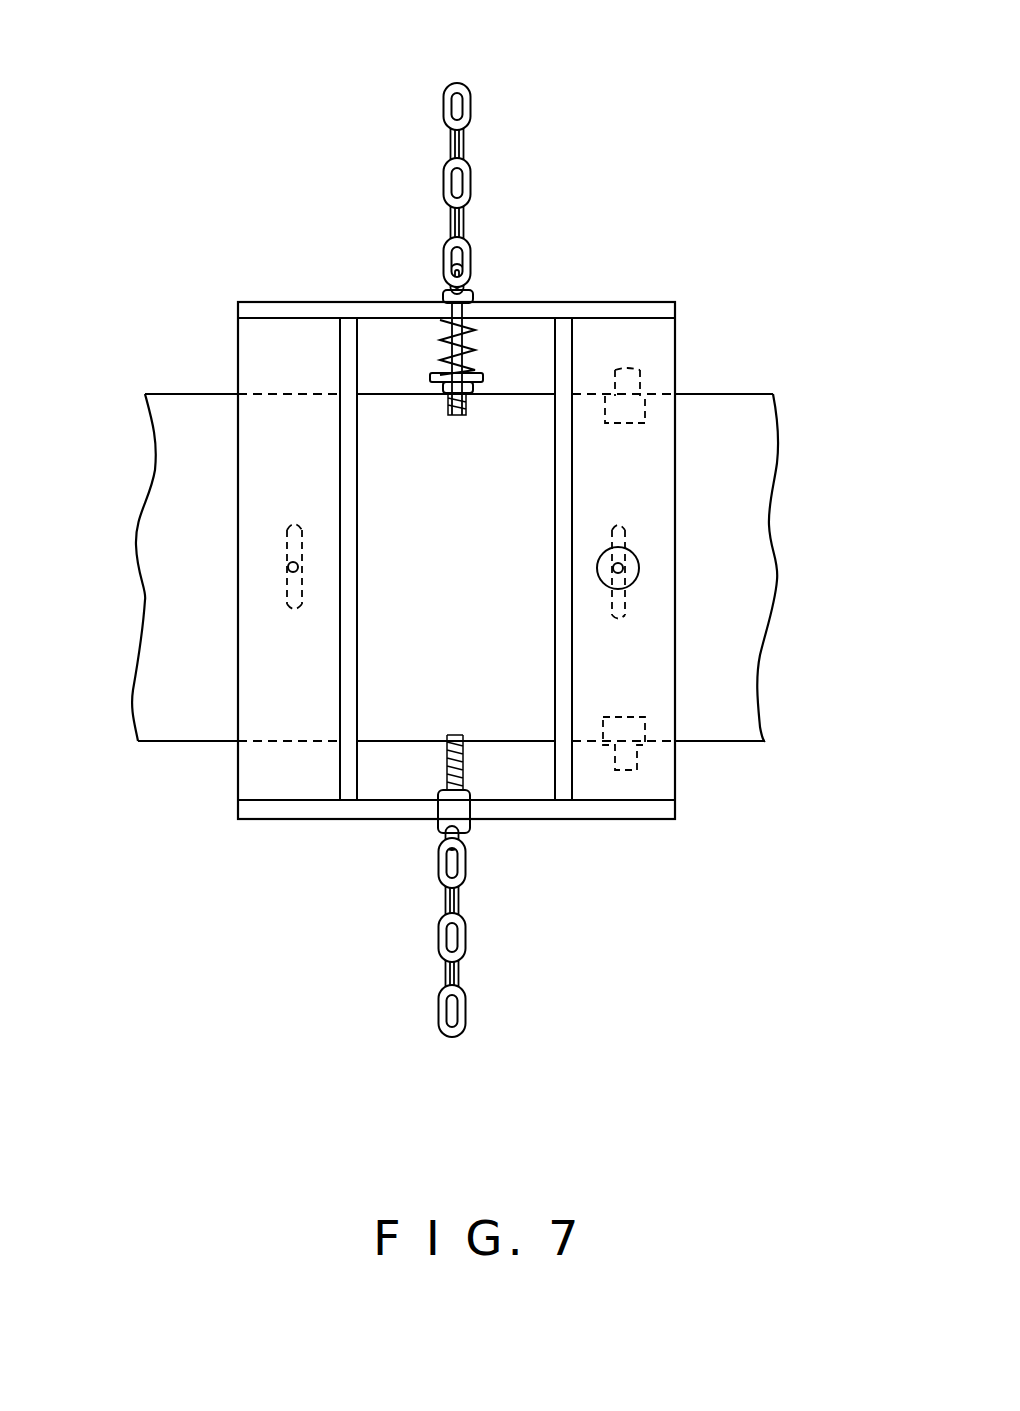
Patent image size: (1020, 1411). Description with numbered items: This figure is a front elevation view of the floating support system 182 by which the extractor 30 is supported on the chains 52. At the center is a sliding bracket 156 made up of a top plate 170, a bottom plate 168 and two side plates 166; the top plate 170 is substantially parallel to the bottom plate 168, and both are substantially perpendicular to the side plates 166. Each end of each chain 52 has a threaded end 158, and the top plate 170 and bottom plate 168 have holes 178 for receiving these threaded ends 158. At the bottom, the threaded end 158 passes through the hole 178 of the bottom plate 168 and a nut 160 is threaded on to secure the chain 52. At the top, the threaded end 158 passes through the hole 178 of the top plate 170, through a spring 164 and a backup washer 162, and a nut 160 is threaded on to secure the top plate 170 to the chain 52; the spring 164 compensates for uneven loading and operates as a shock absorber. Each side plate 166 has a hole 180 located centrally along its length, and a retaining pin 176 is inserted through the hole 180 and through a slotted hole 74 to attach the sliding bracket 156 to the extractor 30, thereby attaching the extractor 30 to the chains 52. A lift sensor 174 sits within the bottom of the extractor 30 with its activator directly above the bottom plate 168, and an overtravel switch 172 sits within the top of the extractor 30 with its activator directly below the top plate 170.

The extractor 30 is at (738, 552).
The chain 52 is at (472, 110).
The slotted hole 74 is at (293, 605).
The sliding bracket 156 is at (462, 561).
The threaded end 158 is at (447, 765).
The nut 160 is at (430, 385).
The backup washer 162 is at (490, 376).
The spring 164 is at (477, 347).
The side plate 166 is at (280, 352).
The bottom plate 168 is at (252, 820).
The top plate 170 is at (272, 302).
The overtravel switch 172 is at (638, 375).
The lift sensor 174 is at (648, 713).
The retaining pin 176 is at (640, 562).
The hole 178 is at (468, 805).
The hole 180 is at (288, 570).
The floating support system 182 is at (243, 252).